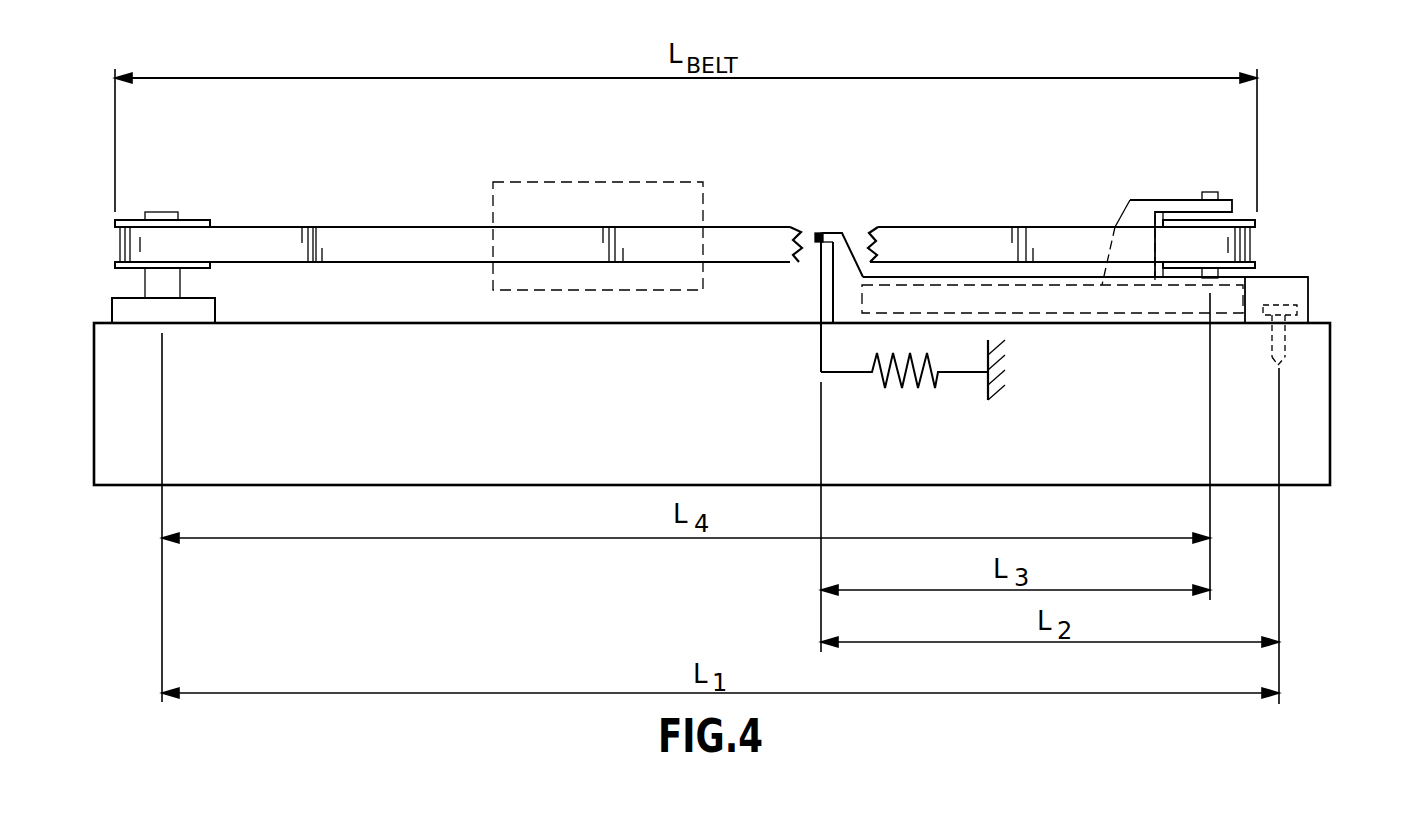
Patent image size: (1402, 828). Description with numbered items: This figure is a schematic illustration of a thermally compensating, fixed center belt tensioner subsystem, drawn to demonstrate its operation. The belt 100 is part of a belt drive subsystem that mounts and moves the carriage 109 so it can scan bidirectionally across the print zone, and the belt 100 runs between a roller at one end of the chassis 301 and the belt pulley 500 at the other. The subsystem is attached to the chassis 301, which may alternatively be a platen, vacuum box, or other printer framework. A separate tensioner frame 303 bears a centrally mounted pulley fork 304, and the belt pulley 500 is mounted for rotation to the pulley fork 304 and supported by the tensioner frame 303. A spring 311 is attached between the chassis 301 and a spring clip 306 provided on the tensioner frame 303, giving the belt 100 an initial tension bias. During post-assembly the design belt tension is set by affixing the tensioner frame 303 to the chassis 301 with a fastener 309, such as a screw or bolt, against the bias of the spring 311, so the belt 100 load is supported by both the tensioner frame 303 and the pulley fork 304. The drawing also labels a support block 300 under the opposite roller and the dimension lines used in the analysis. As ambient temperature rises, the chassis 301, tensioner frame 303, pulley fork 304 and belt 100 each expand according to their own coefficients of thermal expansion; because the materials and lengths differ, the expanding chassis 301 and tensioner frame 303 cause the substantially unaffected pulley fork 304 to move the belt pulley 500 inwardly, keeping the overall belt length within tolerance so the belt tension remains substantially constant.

The belt 100 is at (333, 227).
The carriage 109 is at (655, 182).
The roller support base 300 is at (216, 312).
The chassis 301 is at (986, 392).
The tensioner frame 303 is at (1297, 277).
The pulley fork 304 is at (1129, 200).
The spring clip 306 is at (824, 232).
The fastener 309 is at (1288, 342).
The spring 311 is at (898, 392).
The belt pulley 500 is at (1254, 240).